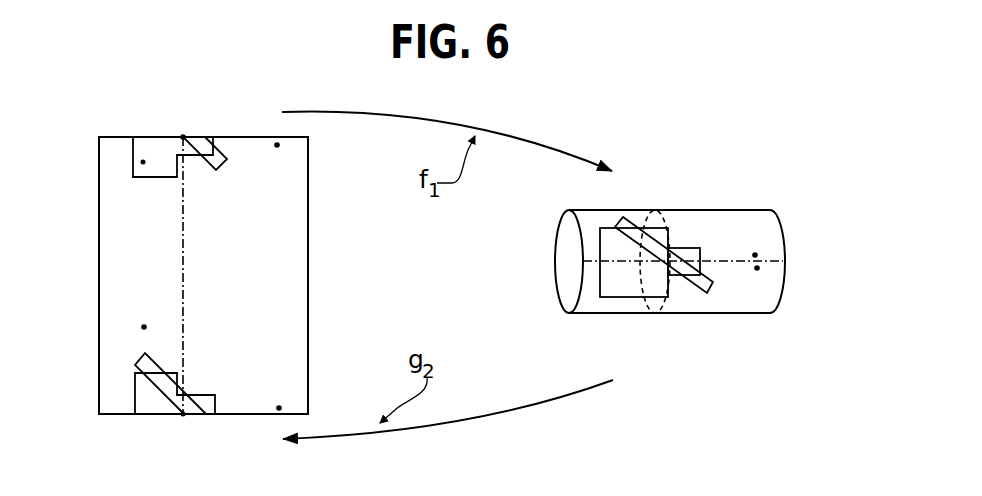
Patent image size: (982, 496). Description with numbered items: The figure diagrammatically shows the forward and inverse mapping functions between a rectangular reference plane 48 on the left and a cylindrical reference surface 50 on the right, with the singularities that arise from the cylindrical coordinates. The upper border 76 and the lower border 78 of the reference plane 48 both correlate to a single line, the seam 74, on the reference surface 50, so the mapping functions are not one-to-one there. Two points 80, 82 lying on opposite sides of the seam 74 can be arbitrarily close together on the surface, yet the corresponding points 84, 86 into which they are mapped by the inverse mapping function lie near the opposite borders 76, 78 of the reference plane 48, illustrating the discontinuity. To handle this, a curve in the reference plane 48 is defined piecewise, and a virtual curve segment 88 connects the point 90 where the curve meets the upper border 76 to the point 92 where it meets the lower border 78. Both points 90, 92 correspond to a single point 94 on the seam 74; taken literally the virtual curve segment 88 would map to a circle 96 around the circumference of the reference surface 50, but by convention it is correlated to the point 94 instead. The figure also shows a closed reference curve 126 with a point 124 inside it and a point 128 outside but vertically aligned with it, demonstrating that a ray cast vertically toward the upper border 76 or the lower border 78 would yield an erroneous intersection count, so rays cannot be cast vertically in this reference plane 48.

The reference plane 48 is at (99, 275).
The reference surface 50 is at (758, 210).
The seam 74 is at (765, 265).
The upper border 76 is at (265, 137).
The lower border 78 is at (250, 414).
The point 80 is at (762, 242).
The point 82 is at (755, 277).
The corresponding point 84 is at (280, 153).
The corresponding point 86 is at (282, 397).
The virtual curve segment 88 is at (186, 274).
The point 90 is at (183, 137).
The point 92 is at (183, 414).
The point 94 is at (667, 248).
The circle 96 is at (663, 223).
The point 124 is at (143, 162).
The closed reference curve 126 is at (170, 177).
The point 128 is at (144, 327).